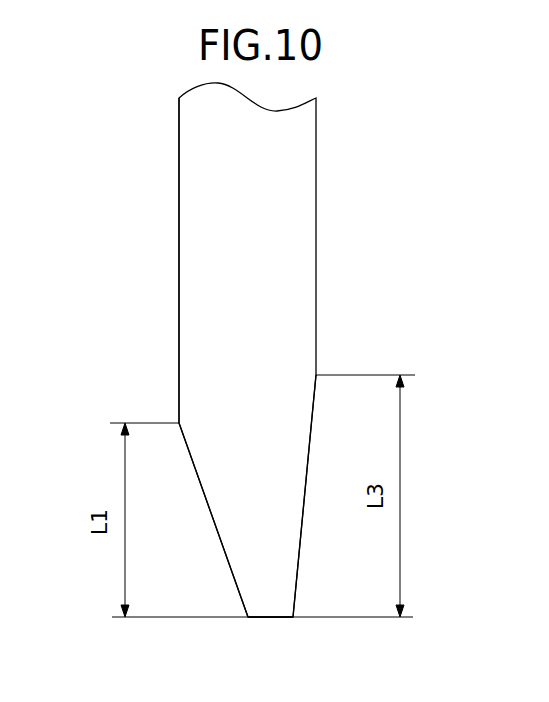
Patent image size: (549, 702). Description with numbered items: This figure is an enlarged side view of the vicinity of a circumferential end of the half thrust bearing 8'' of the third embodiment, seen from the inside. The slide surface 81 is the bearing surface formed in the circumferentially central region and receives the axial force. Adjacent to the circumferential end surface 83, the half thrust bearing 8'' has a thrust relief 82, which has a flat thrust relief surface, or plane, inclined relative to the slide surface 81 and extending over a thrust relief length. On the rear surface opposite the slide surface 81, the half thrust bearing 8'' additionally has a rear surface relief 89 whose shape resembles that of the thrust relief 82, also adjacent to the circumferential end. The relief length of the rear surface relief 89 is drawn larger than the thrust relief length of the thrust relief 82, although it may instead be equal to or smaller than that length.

The half thrust bearing 8'' is at (322, 334).
The slide surface 81 is at (179, 255).
The thrust relief 82 is at (223, 550).
The circumferential end surface 83 is at (272, 617).
The rear surface relief 89 is at (310, 445).